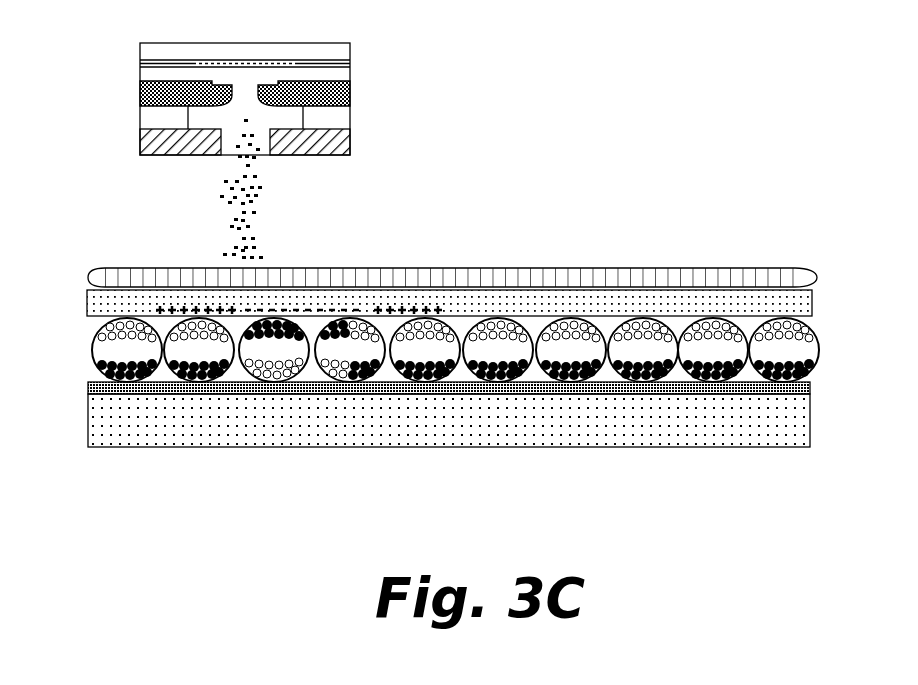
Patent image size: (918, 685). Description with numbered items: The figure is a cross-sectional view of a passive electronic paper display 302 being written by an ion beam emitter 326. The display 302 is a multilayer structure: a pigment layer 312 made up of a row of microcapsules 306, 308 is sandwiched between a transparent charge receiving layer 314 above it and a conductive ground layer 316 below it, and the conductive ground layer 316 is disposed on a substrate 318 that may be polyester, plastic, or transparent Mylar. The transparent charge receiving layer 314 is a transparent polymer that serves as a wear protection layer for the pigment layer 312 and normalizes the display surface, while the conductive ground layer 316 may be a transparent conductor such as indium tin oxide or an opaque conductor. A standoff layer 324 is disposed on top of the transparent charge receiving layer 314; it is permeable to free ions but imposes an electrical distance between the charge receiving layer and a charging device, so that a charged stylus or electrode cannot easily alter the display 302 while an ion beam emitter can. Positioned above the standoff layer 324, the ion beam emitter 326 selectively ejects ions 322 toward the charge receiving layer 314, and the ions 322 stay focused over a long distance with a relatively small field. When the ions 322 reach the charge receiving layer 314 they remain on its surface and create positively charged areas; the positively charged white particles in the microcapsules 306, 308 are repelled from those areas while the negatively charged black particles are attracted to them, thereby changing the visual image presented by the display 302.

The passive electronic paper display 302 is at (72, 272).
The microcapsules 306 is at (683, 368).
The microcapsules 308 is at (543, 368).
The pigment layer 312 is at (492, 398).
The transparent charge receiving layer 314 is at (105, 307).
The conductive ground layer 316 is at (385, 388).
The substrate 318 is at (698, 437).
The ions 322 is at (257, 165).
The standoff layer 324 is at (733, 275).
The ion beam emitter 326 is at (190, 43).